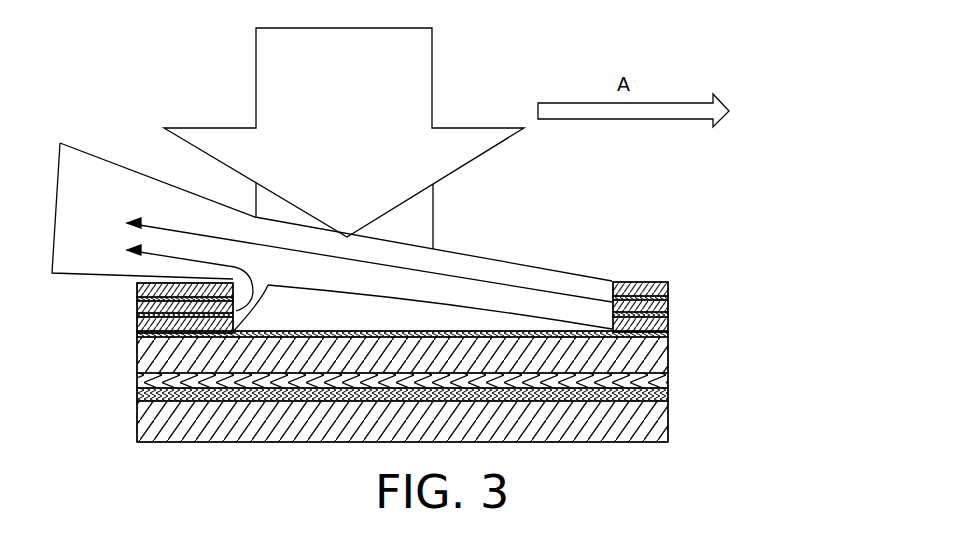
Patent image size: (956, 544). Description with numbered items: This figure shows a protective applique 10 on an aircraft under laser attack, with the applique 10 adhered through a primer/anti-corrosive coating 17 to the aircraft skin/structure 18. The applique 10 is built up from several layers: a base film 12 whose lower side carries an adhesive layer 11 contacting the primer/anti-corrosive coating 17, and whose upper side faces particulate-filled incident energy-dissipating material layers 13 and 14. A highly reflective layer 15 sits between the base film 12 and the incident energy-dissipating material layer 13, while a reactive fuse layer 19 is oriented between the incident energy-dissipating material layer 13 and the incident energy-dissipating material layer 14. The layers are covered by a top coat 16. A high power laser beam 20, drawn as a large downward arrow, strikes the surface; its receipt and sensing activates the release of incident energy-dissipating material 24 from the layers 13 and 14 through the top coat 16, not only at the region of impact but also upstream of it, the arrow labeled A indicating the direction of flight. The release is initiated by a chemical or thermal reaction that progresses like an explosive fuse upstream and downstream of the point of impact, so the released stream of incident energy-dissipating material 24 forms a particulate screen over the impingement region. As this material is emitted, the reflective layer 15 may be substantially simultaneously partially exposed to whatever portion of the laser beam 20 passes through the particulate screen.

The applique 10 is at (677, 283).
The adhesive layer 11 is at (658, 377).
The base film 12 is at (185, 363).
The incident energy-dissipating material layer 13 is at (150, 335).
The incident energy-dissipating material layer 14 is at (137, 302).
The highly reflective layer 15 is at (350, 333).
The top coat 16 is at (638, 282).
The primer/anti-corrosive coating 17 is at (665, 393).
The aircraft skin/structure 18 is at (662, 423).
The reactive fuse layer 19 is at (137, 316).
The high power laser beam 20 is at (415, 73).
The incident energy-dissipating material 24 is at (163, 197).